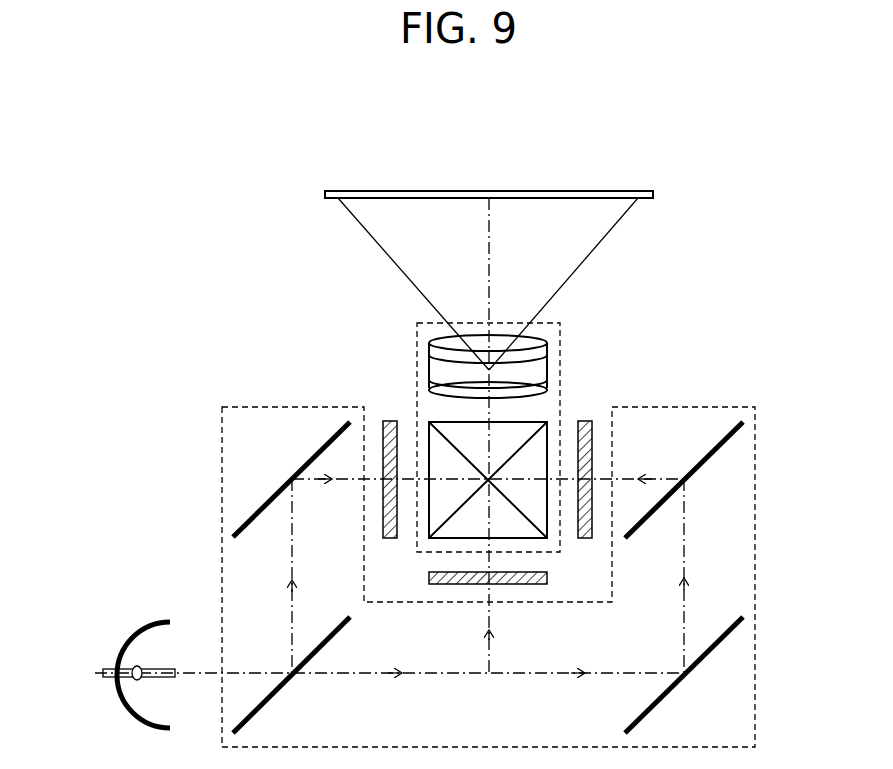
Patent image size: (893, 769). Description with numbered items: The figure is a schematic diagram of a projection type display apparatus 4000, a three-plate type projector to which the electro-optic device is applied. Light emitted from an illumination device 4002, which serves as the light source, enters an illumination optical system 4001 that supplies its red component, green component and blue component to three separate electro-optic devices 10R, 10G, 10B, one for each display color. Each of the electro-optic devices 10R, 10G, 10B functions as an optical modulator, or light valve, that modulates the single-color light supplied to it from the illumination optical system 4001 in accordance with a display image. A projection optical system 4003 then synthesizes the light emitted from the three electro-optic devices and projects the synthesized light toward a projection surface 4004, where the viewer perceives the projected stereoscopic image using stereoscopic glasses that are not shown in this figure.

The projection type display apparatus 4000 is at (683, 113).
The illumination optical system 4001 is at (727, 407).
The illumination device 4002 is at (142, 630).
The projection optical system 4003 is at (563, 340).
The projection surface 4004 is at (416, 191).
The electro-optic device 10R is at (383, 531).
The electro-optic device 10G is at (431, 584).
The electro-optic device 10B is at (592, 446).